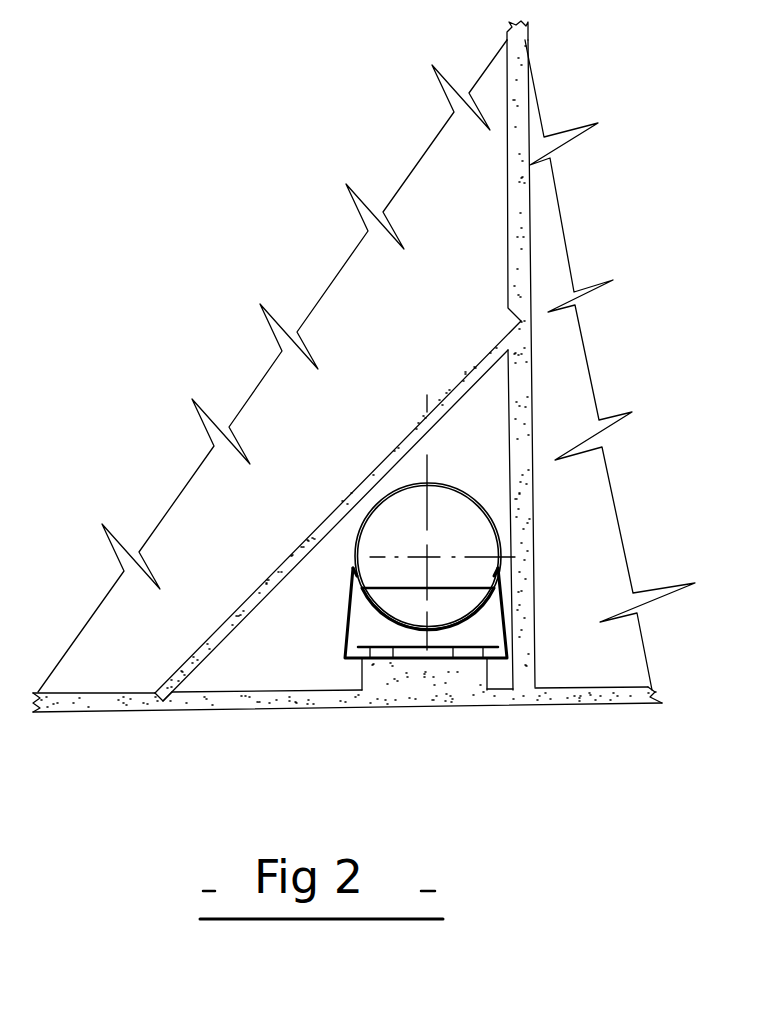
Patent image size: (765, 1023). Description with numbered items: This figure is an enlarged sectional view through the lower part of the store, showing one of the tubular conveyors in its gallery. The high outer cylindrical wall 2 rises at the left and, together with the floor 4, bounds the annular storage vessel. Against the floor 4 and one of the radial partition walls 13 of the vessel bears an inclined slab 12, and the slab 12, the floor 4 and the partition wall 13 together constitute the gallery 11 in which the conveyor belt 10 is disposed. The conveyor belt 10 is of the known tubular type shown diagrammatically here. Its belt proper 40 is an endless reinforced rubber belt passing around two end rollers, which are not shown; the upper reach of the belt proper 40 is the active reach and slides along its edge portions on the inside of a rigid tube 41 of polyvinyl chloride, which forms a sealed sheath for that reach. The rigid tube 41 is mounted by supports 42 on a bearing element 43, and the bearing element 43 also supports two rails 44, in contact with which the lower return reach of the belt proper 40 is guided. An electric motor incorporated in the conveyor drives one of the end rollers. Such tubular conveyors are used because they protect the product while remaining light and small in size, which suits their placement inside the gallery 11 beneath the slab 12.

The outer cylindrical wall 2 is at (393, 353).
The floor 4 is at (297, 711).
The conveyor belt 10 is at (435, 522).
The gallery 11 is at (289, 671).
The slab 12 is at (361, 487).
The radial partition wall 13 is at (512, 197).
The belt proper 40 is at (444, 587).
The rigid tube 41 is at (471, 503).
The supports 42 is at (348, 612).
The bearing element 43 is at (362, 680).
The rails 44 is at (438, 635).